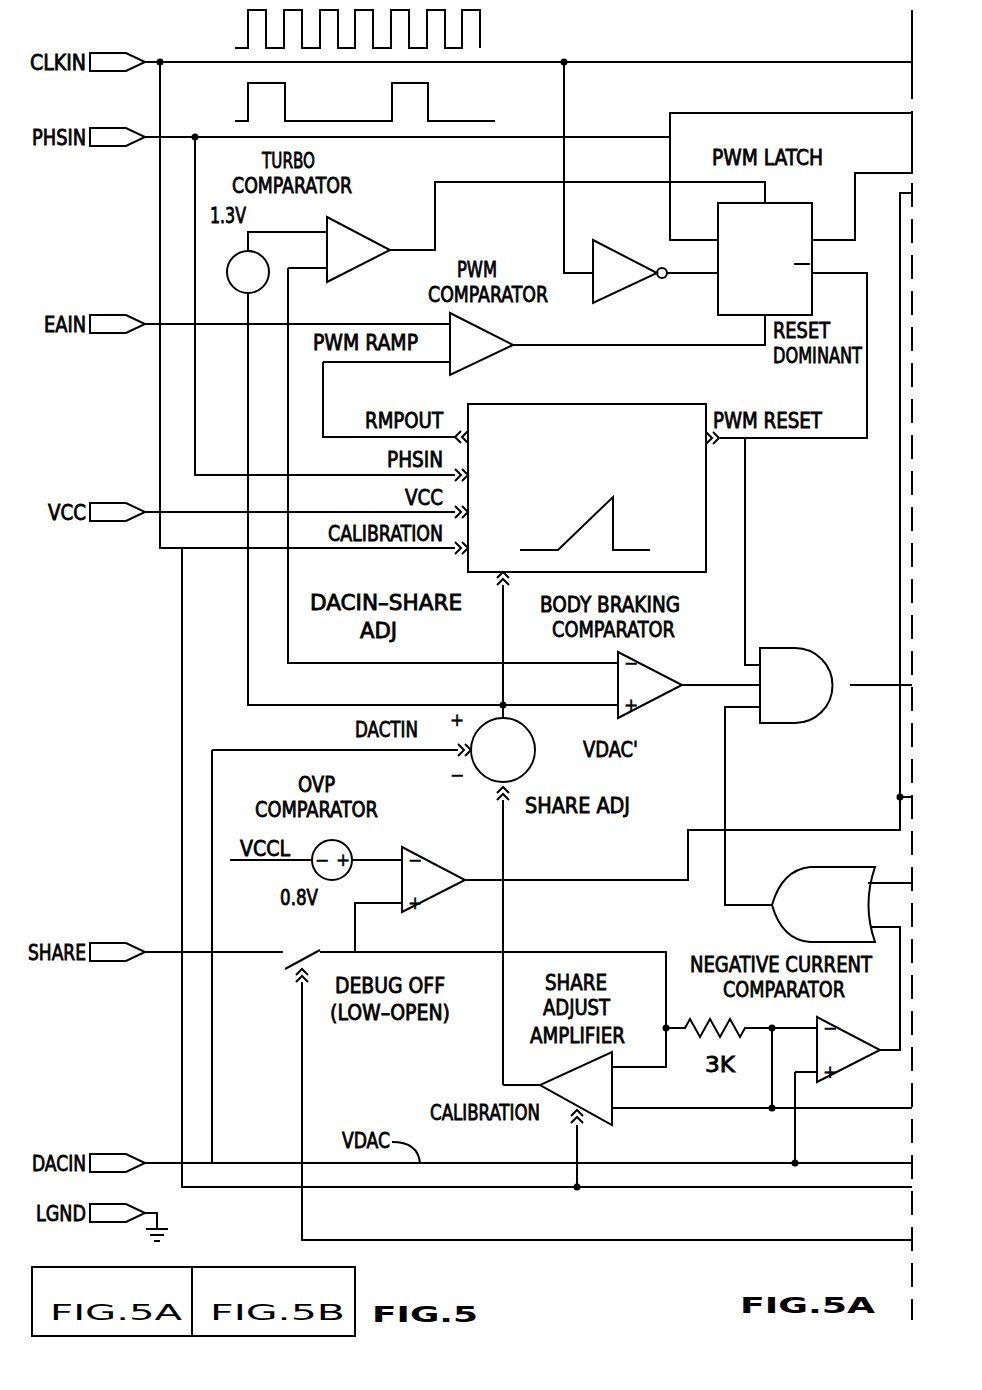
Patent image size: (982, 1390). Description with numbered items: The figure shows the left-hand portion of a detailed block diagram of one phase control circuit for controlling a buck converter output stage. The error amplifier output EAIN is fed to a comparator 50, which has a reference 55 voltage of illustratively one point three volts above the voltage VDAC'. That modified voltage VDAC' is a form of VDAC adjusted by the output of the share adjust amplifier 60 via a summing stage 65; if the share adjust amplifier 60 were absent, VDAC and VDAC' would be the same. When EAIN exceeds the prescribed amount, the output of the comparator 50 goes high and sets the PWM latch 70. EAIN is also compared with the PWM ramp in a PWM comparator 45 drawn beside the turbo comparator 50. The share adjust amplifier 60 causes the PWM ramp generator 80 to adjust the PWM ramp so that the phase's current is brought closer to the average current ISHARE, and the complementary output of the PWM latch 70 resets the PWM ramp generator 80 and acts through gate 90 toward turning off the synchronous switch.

The PWM comparator 45 is at (490, 358).
The comparator 50 is at (340, 277).
The reference voltage 55 is at (228, 262).
The share adjust amplifier 60 is at (595, 1118).
The summing stage 65 is at (481, 777).
The PWM latch 70 is at (714, 290).
The PWM ramp generator 80 is at (596, 403).
The gate 90 is at (785, 647).